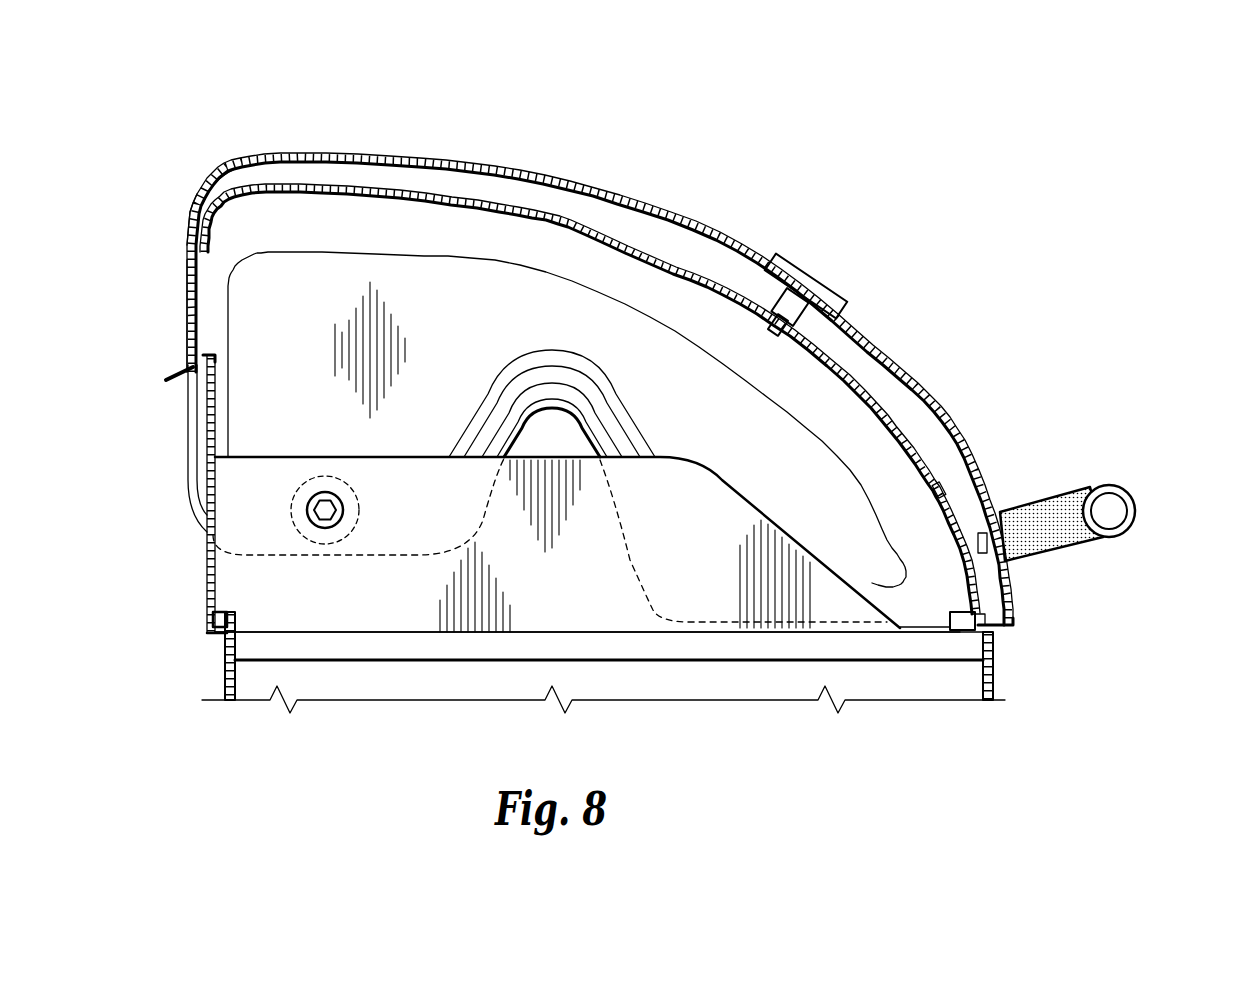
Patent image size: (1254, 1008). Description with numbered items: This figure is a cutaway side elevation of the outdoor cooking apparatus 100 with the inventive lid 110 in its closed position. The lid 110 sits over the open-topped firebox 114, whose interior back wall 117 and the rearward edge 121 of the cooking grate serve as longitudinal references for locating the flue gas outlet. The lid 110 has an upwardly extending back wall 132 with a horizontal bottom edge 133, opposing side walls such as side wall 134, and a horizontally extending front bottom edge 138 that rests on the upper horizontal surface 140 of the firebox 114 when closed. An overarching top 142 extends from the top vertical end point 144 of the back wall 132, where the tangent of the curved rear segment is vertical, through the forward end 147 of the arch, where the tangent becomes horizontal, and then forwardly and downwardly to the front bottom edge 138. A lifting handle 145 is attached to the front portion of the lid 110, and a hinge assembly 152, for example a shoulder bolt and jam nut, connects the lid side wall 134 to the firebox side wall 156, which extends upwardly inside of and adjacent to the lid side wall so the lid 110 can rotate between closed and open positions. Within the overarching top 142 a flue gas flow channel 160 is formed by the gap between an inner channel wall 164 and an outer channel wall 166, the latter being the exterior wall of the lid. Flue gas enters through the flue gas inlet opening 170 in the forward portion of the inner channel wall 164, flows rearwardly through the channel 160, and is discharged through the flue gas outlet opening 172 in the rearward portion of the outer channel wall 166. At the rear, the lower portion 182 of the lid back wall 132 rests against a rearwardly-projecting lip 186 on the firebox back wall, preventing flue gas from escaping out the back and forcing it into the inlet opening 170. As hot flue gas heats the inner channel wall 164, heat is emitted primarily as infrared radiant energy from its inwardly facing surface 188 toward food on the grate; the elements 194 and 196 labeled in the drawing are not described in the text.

The outdoor cooking apparatus 100 is at (800, 250).
The lid 110 is at (875, 345).
The firebox 114 is at (245, 648).
The interior back wall of the firebox 117 is at (294, 601).
The rearward edge of the cooking grate 121 is at (226, 615).
The back wall 132 is at (186, 290).
The horizontal bottom edge 133 is at (190, 500).
The side wall 134 is at (415, 315).
The front bottom edge 138 is at (1005, 635).
The upper horizontal surface of the firebox 140 is at (993, 625).
The overarching top 142 is at (656, 222).
The top vertical end point 144 is at (190, 240).
The lifting handle 145 is at (1108, 487).
The forward end of the arch 147 is at (262, 153).
The hinge assembly 152 is at (343, 510).
The firebox side wall 156 is at (715, 503).
The flue gas flow channel 160 is at (388, 166).
The inner channel wall 164 is at (700, 280).
The outer channel wall 166 is at (594, 190).
The flue gas inlet opening 170 is at (935, 490).
The flue gas outlet opening 172 is at (233, 158).
The lower portion of the lid back wall 182 is at (190, 368).
The rearwardly-projecting lip 186 is at (203, 360).
The inwardly facing surface 188 is at (810, 348).
The arch channel 194 is at (553, 425).
The arch channel wall 196 is at (552, 380).